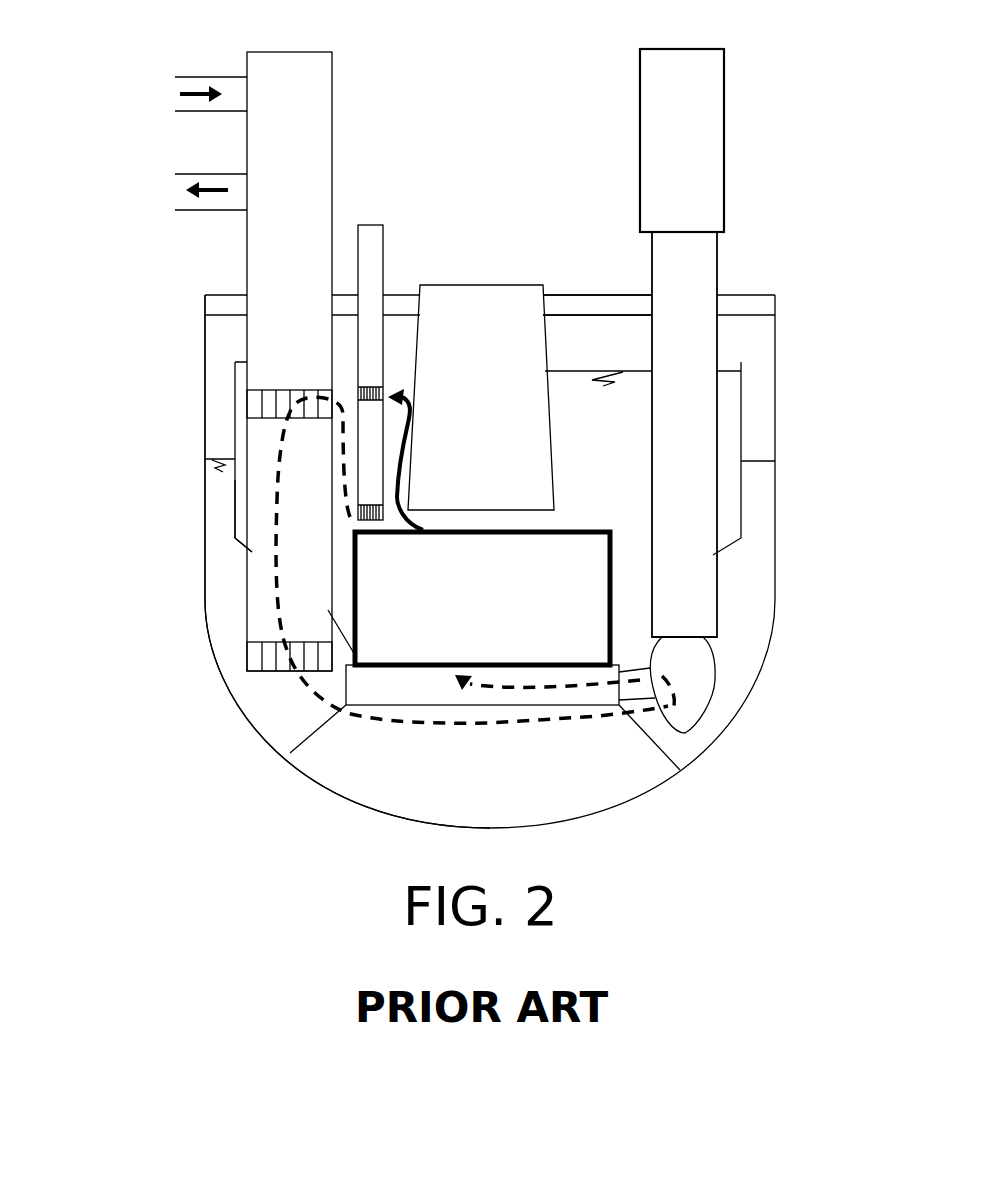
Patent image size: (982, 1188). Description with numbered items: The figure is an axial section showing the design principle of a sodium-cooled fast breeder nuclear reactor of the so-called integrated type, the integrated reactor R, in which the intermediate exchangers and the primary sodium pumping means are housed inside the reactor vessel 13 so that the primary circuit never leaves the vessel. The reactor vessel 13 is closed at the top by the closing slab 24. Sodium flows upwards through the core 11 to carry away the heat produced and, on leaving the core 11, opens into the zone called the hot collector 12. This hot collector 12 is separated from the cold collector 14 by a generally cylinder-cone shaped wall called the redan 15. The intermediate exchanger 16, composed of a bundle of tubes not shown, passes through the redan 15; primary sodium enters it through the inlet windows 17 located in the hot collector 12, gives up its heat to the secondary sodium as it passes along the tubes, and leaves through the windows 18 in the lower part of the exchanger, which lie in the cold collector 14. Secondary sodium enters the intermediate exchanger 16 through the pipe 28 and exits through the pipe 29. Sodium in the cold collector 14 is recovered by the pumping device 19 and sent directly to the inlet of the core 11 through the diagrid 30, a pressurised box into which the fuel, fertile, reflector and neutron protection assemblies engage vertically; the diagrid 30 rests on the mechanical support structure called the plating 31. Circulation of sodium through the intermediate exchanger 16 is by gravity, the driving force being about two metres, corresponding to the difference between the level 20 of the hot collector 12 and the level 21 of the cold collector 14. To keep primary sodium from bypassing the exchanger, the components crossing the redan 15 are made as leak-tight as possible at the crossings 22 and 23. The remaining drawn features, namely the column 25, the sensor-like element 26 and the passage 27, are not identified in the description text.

The core 11 is at (391, 636).
The hot collector 12 is at (594, 503).
The reactor vessel 13 is at (202, 365).
The cold collector 14 is at (217, 622).
The redan 15 is at (232, 519).
The intermediate exchanger 16 is at (257, 502).
The inlet windows 17 is at (257, 400).
The windows 18 is at (261, 657).
The pumping device 19 is at (691, 673).
The level of the hot collector 20 is at (628, 362).
The level of the cold collector 21 is at (212, 456).
The crossing 22 is at (239, 549).
The crossing 23 is at (728, 563).
The closing slab 24 is at (598, 296).
The probe column 25 is at (367, 416).
The temperature sensor 26 is at (409, 476).
The exchange column 27 is at (264, 579).
The pipe 28 is at (172, 106).
The pipe 29 is at (172, 186).
The diagrid 30 is at (432, 683).
The plating 31 is at (549, 772).
The integrated reactor R is at (628, 849).